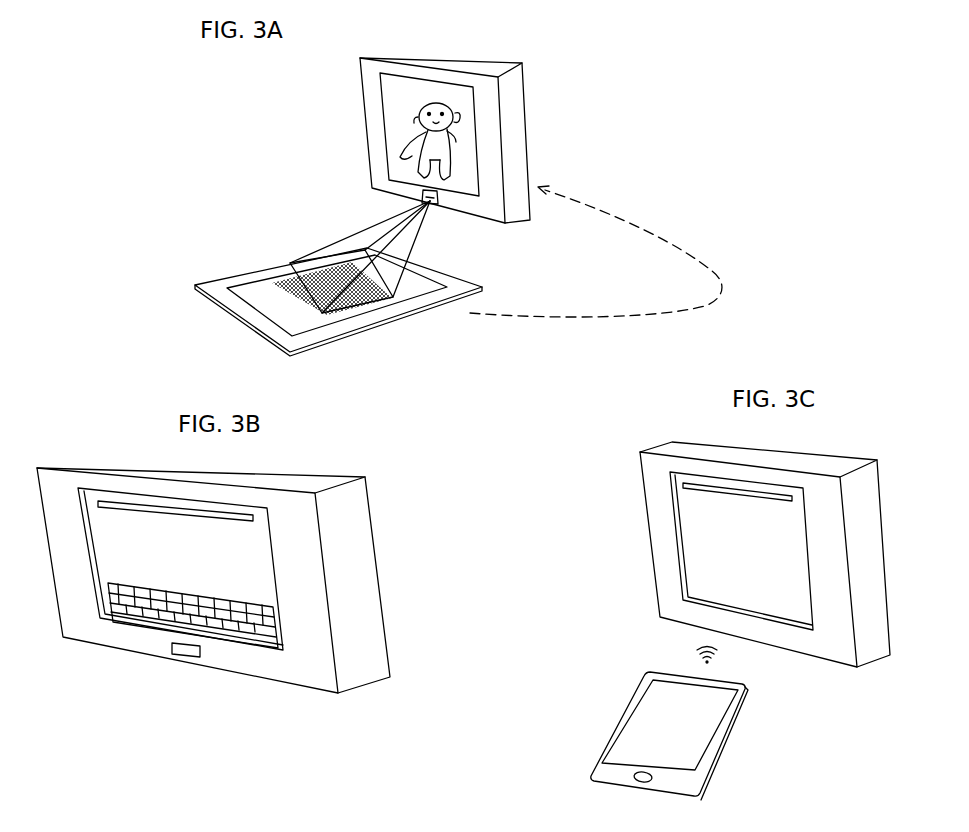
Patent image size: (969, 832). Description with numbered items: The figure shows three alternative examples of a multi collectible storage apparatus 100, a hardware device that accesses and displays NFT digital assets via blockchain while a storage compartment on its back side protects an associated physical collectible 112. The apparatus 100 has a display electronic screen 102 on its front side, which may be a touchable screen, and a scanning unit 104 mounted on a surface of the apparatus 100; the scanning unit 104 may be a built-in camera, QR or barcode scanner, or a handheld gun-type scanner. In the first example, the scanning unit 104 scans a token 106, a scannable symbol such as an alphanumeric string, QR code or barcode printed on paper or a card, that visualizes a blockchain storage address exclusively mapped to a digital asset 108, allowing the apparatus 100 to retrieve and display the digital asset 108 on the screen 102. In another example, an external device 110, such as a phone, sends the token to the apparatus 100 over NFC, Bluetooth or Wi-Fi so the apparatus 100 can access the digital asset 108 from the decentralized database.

In FIG. 3A, the multi collectible storage apparatus 100 is at (552, 90).
In FIG. 3B, the multi collectible storage apparatus 100 is at (137, 445).
In FIG. 3C, the multi collectible storage apparatus 100 is at (853, 452).
In FIG. 3A, the display electronic screen 102 is at (537, 134).
In FIG. 3A, the scanning unit 104 is at (434, 204).
In FIG. 3A, the token 106 is at (303, 270).
In FIG. 3A, the digital asset 108 is at (415, 111).
In FIG. 3C, the external device 110 is at (692, 743).
In FIG. 3A, the physical collectible 112 is at (392, 313).